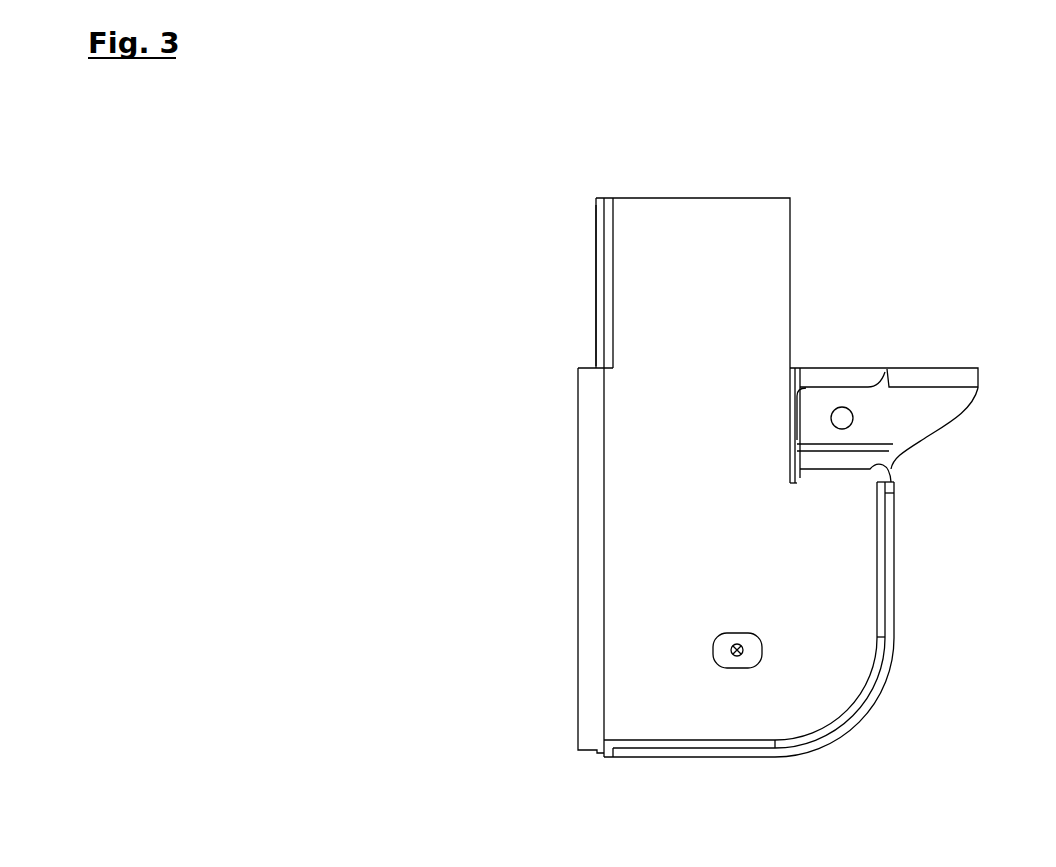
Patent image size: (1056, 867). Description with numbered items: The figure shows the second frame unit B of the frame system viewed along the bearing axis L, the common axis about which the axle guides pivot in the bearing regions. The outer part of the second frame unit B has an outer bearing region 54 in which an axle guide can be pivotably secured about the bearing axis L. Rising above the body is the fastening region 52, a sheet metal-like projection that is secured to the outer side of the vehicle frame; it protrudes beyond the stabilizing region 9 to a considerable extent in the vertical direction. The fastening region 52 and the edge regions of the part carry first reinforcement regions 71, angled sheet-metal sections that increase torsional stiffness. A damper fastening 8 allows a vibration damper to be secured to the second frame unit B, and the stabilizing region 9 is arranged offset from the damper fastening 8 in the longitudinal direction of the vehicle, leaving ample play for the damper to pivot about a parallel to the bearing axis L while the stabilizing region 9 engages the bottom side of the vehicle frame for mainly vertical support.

The fastening region 52 is at (742, 213).
The first reinforcement region 71 is at (598, 282).
The outer bearing region 54 is at (755, 655).
The stabilizing region 9 is at (952, 378).
The damper fastening 8 is at (843, 418).
The bearing axis L is at (735, 650).
The second frame unit B is at (826, 297).